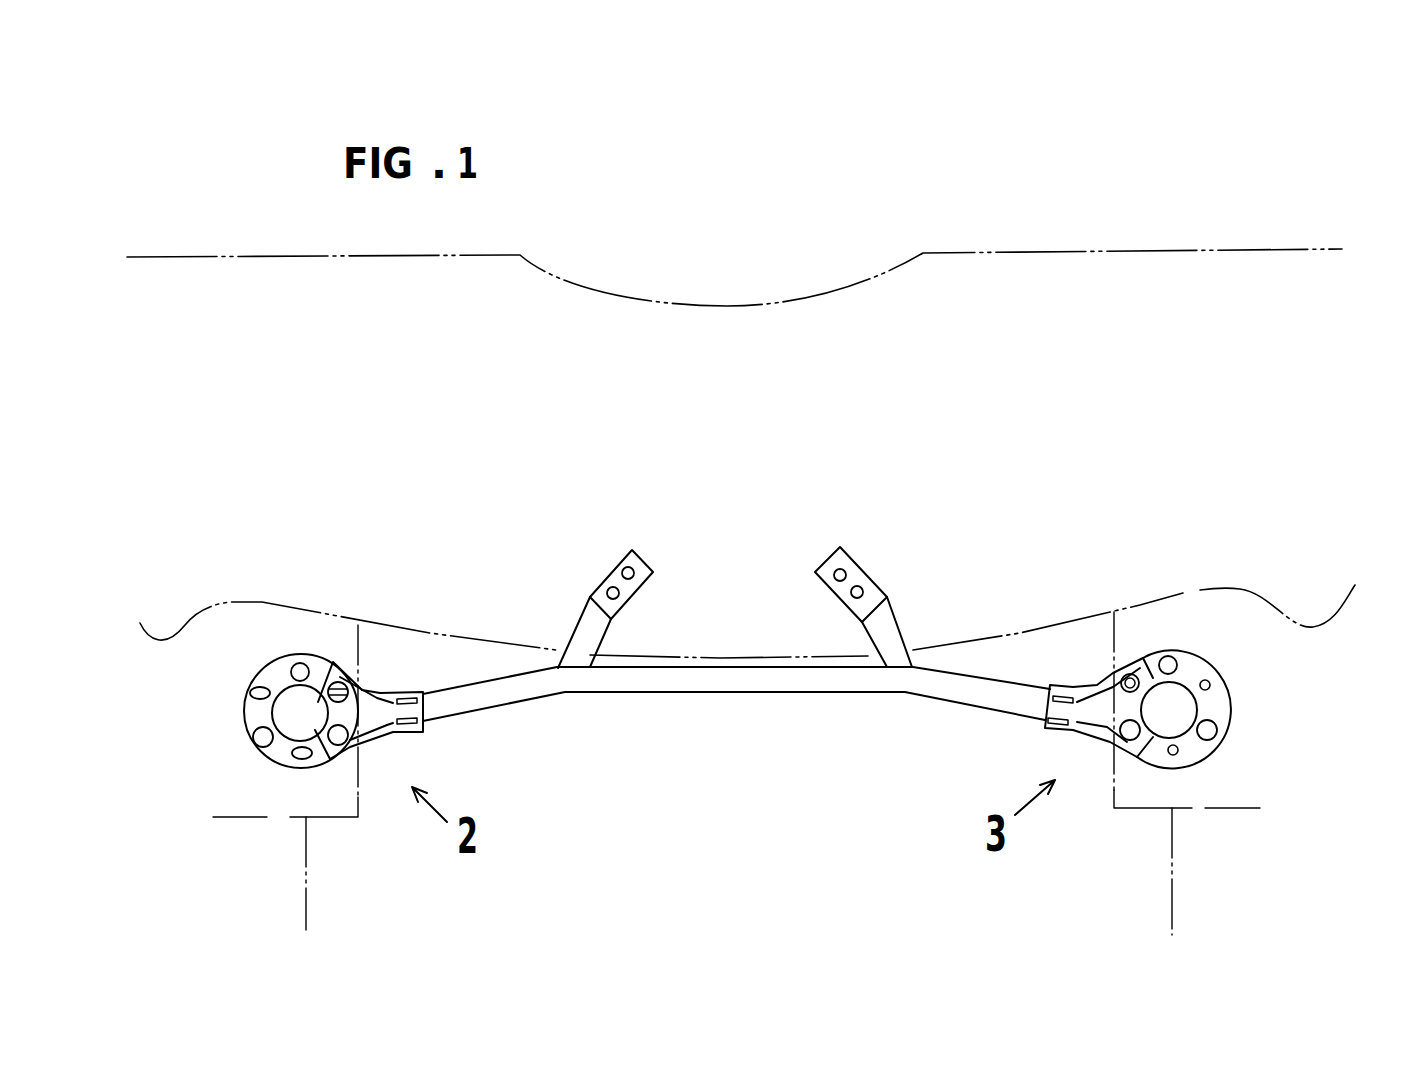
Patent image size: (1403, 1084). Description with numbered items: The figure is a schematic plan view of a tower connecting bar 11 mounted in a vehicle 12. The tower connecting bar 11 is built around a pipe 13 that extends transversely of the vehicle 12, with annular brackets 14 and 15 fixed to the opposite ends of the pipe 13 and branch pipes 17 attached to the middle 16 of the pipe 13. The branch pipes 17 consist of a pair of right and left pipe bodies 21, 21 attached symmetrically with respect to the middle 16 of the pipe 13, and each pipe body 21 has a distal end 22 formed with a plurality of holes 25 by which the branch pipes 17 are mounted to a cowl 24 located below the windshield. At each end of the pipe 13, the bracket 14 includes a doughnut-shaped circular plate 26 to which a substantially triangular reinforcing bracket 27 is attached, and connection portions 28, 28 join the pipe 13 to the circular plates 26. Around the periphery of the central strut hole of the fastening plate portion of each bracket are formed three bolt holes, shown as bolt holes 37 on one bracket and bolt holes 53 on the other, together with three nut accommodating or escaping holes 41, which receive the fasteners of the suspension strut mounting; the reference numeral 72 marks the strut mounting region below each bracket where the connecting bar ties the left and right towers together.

The tower connecting bar 11 is at (502, 595).
The vehicle 12 is at (283, 373).
The pipe 13 is at (652, 665).
The annular bracket 14 is at (1160, 628).
The annular bracket 15 is at (303, 637).
The middle of the pipe 16 is at (738, 665).
The branch pipes 17 is at (851, 537).
The pipe body 21 is at (578, 625).
The distal end 22 is at (632, 550).
The cowl 24 is at (956, 402).
The holes 25 is at (607, 588).
The circular plate 26 is at (268, 658).
The reinforcing bracket 27 is at (325, 657).
The connection portion 28 is at (387, 690).
The bolt holes 37 is at (254, 688).
The nut accommodating holes 41 is at (264, 742).
The bolt holes 53 is at (1211, 686).
The strut mounting portion 72 is at (363, 798).